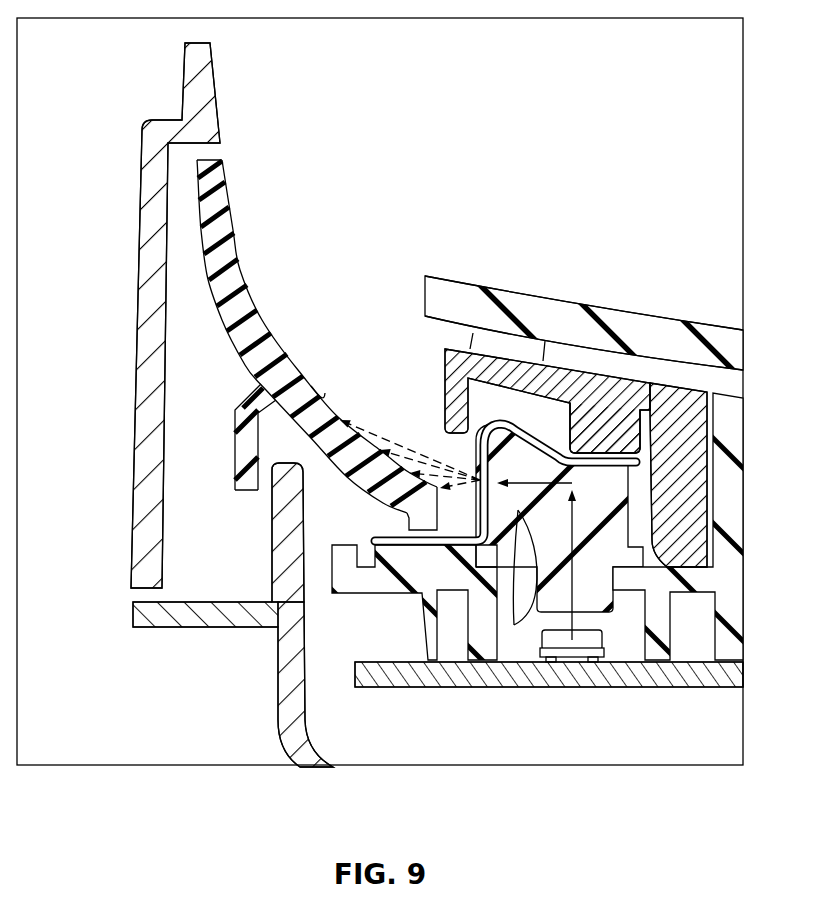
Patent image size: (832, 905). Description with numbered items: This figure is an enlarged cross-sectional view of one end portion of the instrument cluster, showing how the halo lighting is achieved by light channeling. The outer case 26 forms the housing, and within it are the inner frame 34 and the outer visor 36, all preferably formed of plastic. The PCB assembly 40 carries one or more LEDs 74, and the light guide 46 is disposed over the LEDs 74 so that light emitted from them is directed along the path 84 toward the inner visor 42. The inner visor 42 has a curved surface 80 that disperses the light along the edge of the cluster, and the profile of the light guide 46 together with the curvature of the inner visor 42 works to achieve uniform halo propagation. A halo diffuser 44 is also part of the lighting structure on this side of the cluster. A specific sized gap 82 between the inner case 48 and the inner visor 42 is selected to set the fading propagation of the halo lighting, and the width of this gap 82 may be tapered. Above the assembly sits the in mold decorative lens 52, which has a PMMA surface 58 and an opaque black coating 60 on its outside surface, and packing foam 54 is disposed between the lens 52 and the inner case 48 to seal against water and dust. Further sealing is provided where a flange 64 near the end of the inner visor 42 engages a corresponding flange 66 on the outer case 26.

The outer case 26 is at (285, 688).
The inner frame 34 is at (723, 582).
The outer visor 36 is at (141, 437).
The PCB assembly 40 is at (553, 680).
The inner visor 42 is at (232, 270).
The halo diffuser 44 is at (528, 450).
The light guide 46 is at (598, 528).
The inner case 48 is at (620, 405).
The in mold decorative lens 52 is at (617, 320).
The packing foam 54 is at (513, 352).
The PMMA surface 58 is at (693, 338).
The coating 60 is at (543, 296).
The flange 64 is at (245, 452).
The flange 66 is at (283, 530).
The LED 74 is at (577, 660).
The curved surface 80 is at (322, 395).
The gap 82 is at (453, 450).
The path 84 is at (514, 625).